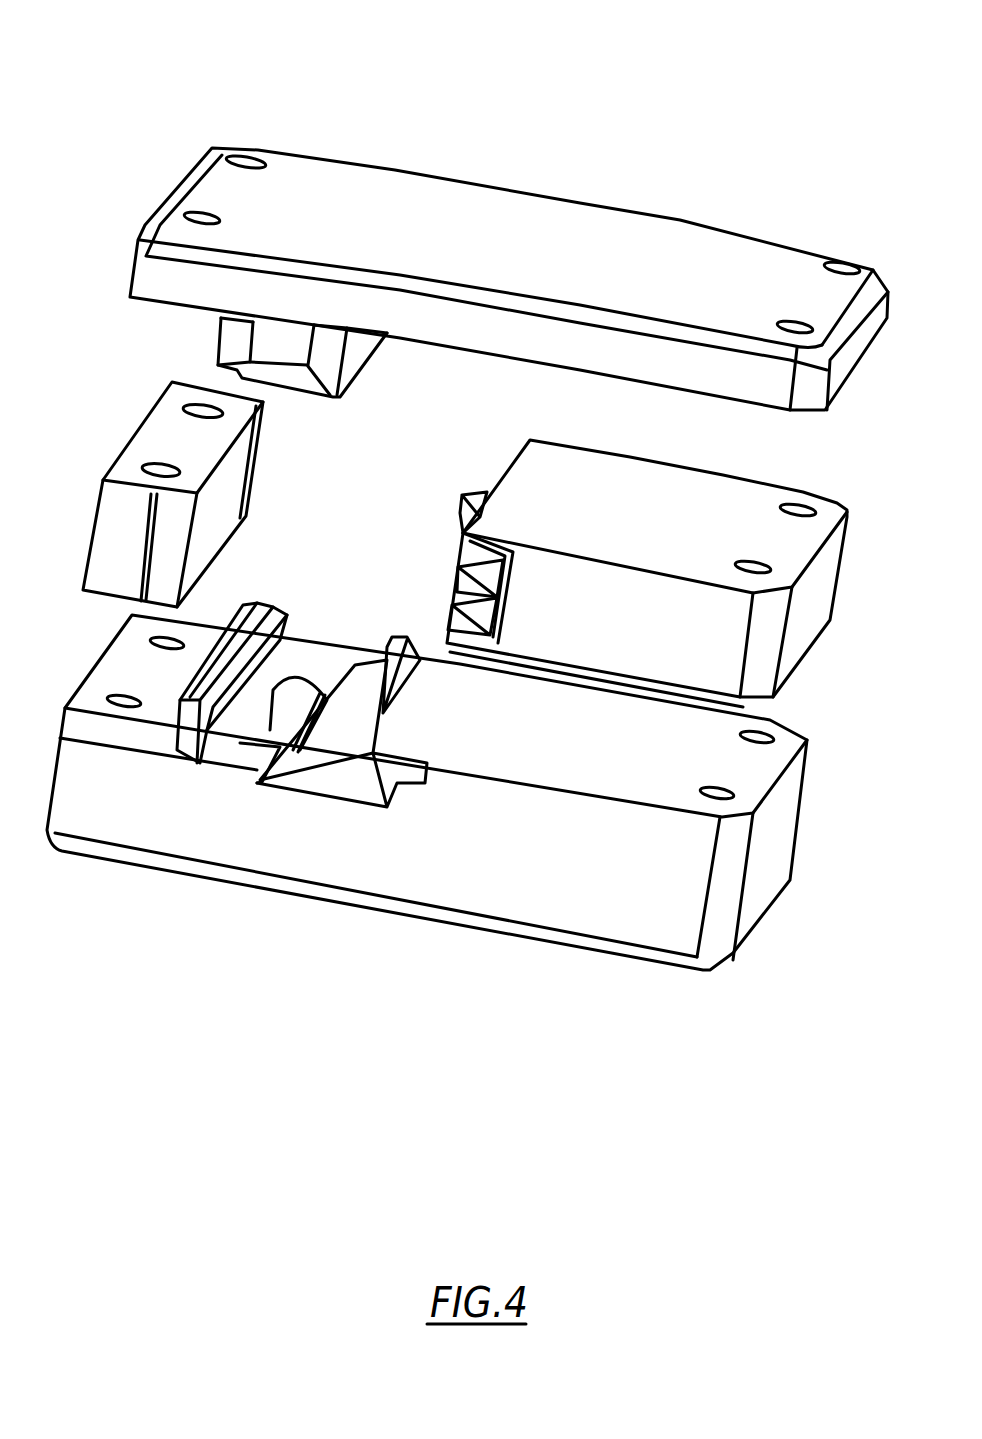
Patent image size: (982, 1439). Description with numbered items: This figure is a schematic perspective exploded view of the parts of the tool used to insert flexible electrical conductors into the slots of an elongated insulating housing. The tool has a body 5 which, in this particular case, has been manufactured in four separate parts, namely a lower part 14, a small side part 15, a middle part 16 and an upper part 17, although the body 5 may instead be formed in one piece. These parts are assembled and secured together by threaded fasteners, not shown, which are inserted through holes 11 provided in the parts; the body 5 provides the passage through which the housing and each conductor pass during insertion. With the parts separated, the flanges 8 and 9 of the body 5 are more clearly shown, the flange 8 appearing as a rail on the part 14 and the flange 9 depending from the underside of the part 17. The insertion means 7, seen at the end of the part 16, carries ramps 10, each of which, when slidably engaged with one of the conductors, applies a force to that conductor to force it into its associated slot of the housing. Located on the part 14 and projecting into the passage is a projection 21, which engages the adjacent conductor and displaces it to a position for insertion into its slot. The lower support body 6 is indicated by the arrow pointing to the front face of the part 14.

The body 5 is at (722, 185).
The lower support body 6 is at (316, 830).
The insertion means 7 is at (438, 598).
The flange 8 is at (272, 604).
The flange 9 is at (290, 378).
The ramp 10 is at (413, 668).
The hole 11 is at (258, 153).
The part 14 is at (558, 875).
The part 15 is at (140, 562).
The part 16 is at (688, 656).
The part 17 is at (546, 264).
The projection 21 is at (257, 743).